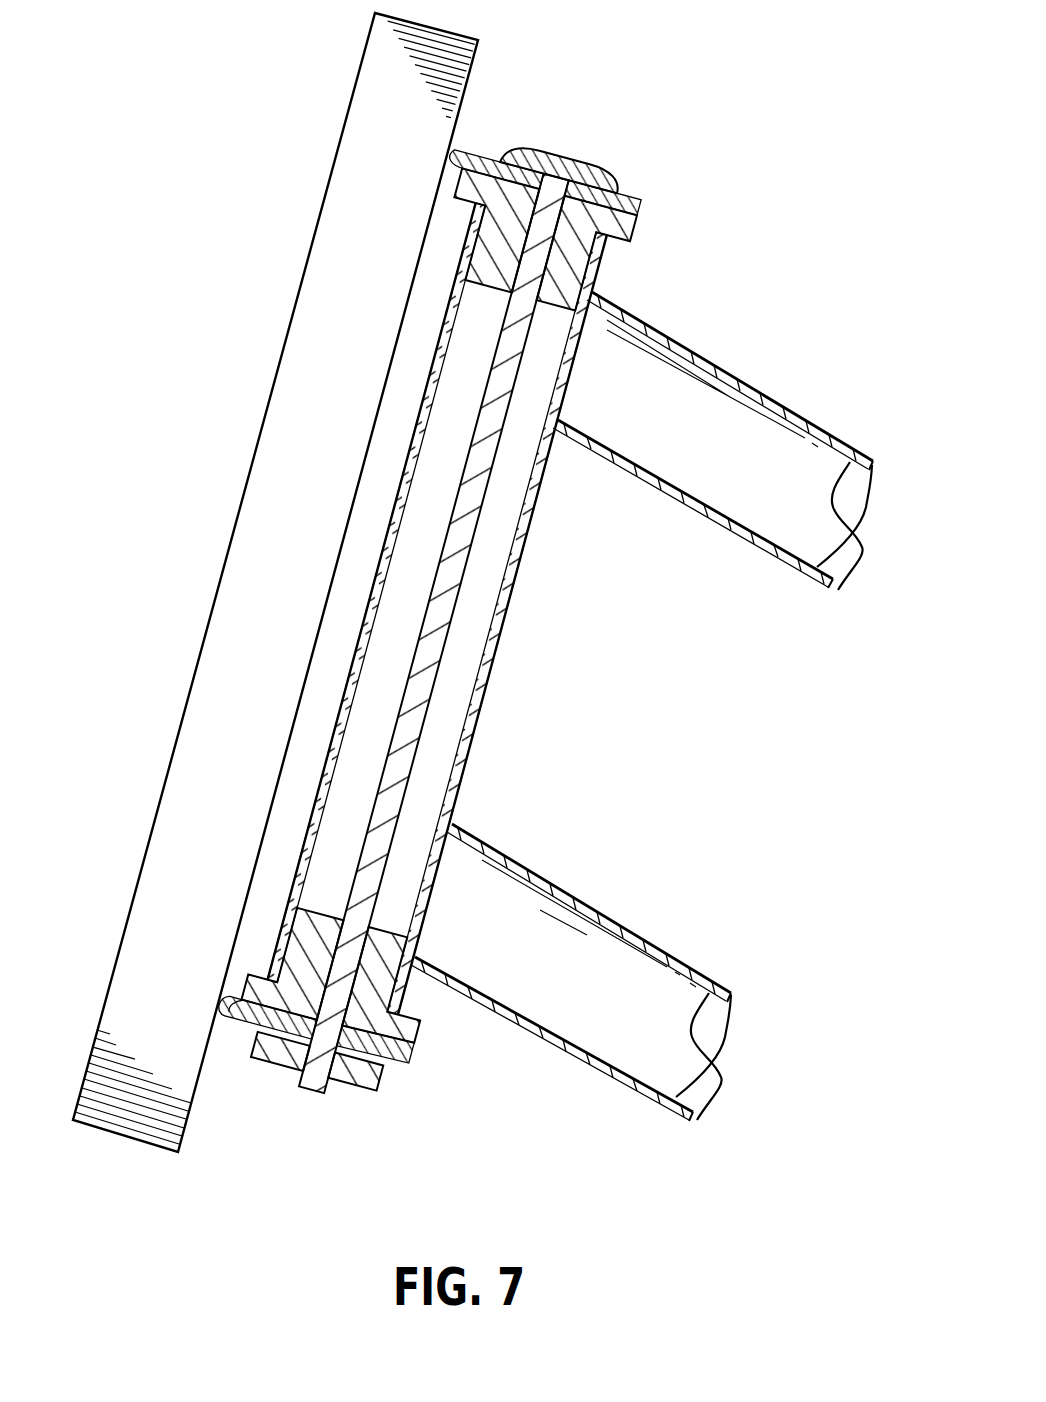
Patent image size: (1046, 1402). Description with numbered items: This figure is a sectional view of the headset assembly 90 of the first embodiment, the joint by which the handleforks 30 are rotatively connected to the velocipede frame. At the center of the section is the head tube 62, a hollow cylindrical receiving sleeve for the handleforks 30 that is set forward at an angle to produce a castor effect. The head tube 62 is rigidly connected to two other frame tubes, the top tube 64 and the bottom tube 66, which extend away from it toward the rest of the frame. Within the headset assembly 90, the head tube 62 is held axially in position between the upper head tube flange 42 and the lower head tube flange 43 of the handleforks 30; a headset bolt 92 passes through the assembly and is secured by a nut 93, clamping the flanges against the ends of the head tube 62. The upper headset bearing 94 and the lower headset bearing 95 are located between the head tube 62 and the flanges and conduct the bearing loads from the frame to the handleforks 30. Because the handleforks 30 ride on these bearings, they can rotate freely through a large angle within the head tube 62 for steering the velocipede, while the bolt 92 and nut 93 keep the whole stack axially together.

The handleforks 30 is at (300, 285).
The upper head tube flange 42 is at (469, 152).
The lower head tube flange 43 is at (226, 1033).
The head tube 62 is at (500, 652).
The top tube 64 is at (862, 547).
The bottom tube 66 is at (721, 1077).
The headset assembly 90 is at (479, 615).
The headset bolt 92 is at (593, 167).
The nut 93 is at (366, 1076).
The upper headset bearing 94 is at (640, 231).
The lower headset bearing 95 is at (424, 1031).